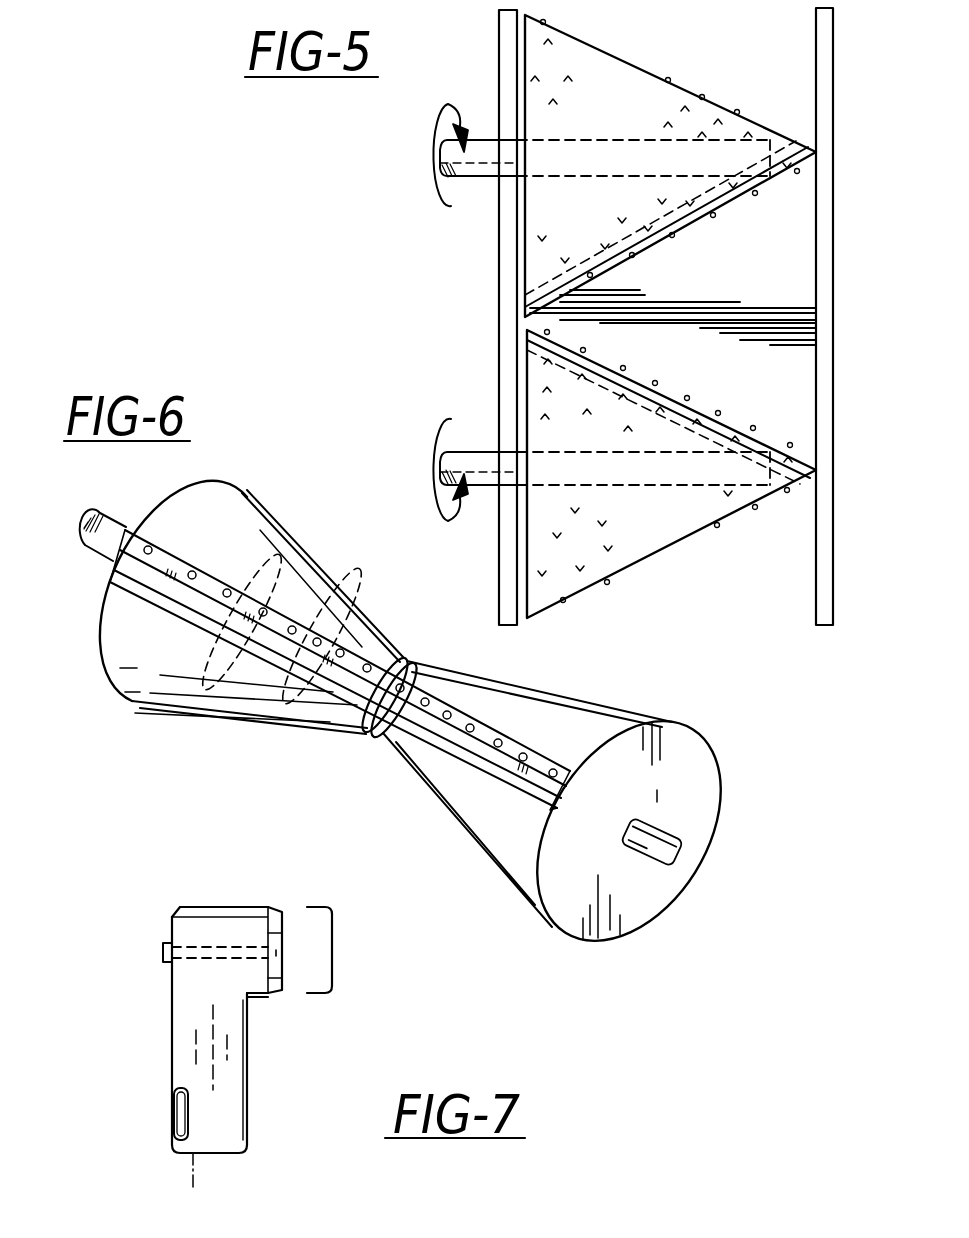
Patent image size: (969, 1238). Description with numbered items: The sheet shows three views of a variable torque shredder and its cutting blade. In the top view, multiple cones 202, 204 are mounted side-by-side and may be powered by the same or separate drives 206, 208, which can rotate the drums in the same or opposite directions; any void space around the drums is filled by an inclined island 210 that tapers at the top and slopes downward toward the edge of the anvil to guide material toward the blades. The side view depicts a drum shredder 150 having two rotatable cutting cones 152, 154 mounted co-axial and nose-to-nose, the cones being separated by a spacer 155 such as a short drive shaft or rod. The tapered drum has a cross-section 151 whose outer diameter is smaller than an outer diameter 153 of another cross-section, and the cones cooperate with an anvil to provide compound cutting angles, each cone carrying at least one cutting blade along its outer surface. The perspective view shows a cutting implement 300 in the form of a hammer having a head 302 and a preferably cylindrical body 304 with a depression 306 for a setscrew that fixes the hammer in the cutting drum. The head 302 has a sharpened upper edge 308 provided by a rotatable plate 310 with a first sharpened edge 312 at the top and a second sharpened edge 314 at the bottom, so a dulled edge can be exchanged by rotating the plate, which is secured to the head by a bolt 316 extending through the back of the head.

In FIG. 6, the drum shredder 150 is at (500, 670).
In FIG. 6, the cross-section 151 is at (341, 598).
In FIG. 6, the cutting cone 152 is at (187, 688).
In FIG. 6, the outer diameter 153 is at (294, 556).
In FIG. 6, the cutting cone 154 is at (510, 846).
In FIG. 6, the spacer 155 is at (384, 652).
In FIG. 5, the cone 202 is at (622, 84).
In FIG. 5, the cone 204 is at (654, 525).
In FIG. 5, the drive 206 is at (482, 170).
In FIG. 5, the drive 208 is at (482, 485).
In FIG. 5, the inclined island 210 is at (790, 394).
In FIG. 7, the cutting implement 300 is at (271, 896).
In FIG. 7, the head 302 is at (189, 928).
In FIG. 7, the body 304 is at (183, 1008).
In FIG. 7, the depression 306 is at (180, 1113).
In FIG. 7, the sharpened upper edge 308 is at (256, 908).
In FIG. 7, the plate 310 is at (332, 950).
In FIG. 7, the first sharpened edge 312 is at (278, 918).
In FIG. 7, the second sharpened edge 314 is at (280, 997).
In FIG. 7, the bolt 316 is at (163, 952).